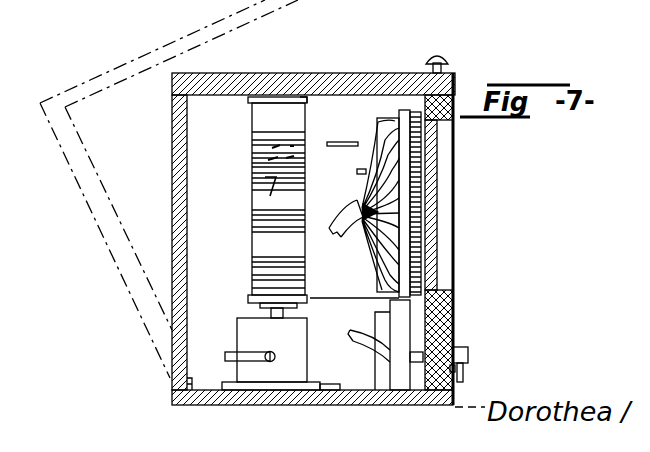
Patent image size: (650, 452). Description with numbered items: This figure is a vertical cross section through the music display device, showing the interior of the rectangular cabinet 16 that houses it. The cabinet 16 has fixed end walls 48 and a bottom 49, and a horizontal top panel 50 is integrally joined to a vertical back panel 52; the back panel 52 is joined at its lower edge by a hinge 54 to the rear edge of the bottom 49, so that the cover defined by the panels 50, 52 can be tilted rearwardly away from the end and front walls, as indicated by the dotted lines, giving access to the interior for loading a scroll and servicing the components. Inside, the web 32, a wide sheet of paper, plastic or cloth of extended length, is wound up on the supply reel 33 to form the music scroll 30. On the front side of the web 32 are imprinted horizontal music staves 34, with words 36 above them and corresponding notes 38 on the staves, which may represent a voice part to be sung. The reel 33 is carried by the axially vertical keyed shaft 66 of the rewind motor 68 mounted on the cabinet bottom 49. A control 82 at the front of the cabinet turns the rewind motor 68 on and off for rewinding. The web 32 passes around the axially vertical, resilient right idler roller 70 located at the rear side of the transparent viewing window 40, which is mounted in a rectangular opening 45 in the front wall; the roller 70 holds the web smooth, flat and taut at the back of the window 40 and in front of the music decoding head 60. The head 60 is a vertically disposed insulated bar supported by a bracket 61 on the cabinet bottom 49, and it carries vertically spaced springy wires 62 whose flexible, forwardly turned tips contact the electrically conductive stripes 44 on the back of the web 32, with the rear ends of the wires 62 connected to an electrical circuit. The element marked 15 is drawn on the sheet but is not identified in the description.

The latch 15 is at (459, 347).
The rectangular cabinet 16 is at (311, 248).
The music scroll 30 is at (216, 175).
The web 32 is at (318, 102).
The reel 33 is at (262, 96).
The music staves 34 is at (262, 258).
The words 36 is at (260, 113).
The notes 38 is at (266, 180).
The transparent viewing window 40 is at (432, 192).
The electrically conductive stripes 44 is at (343, 142).
The rectangular opening 45 is at (437, 290).
The end walls 48 is at (340, 383).
The bottom 49 is at (382, 378).
The horizontal top panel 50 is at (208, 84).
The vertical back panel 52 is at (175, 152).
The hinge 54 is at (204, 367).
The music decoding head 60 is at (455, 137).
The bracket 61 is at (402, 376).
The springy wires 62 is at (421, 221).
The keyed shaft 66 is at (270, 313).
The rewind motor 68 is at (277, 368).
The right idler roller 70 is at (384, 117).
The control 82 is at (463, 378).